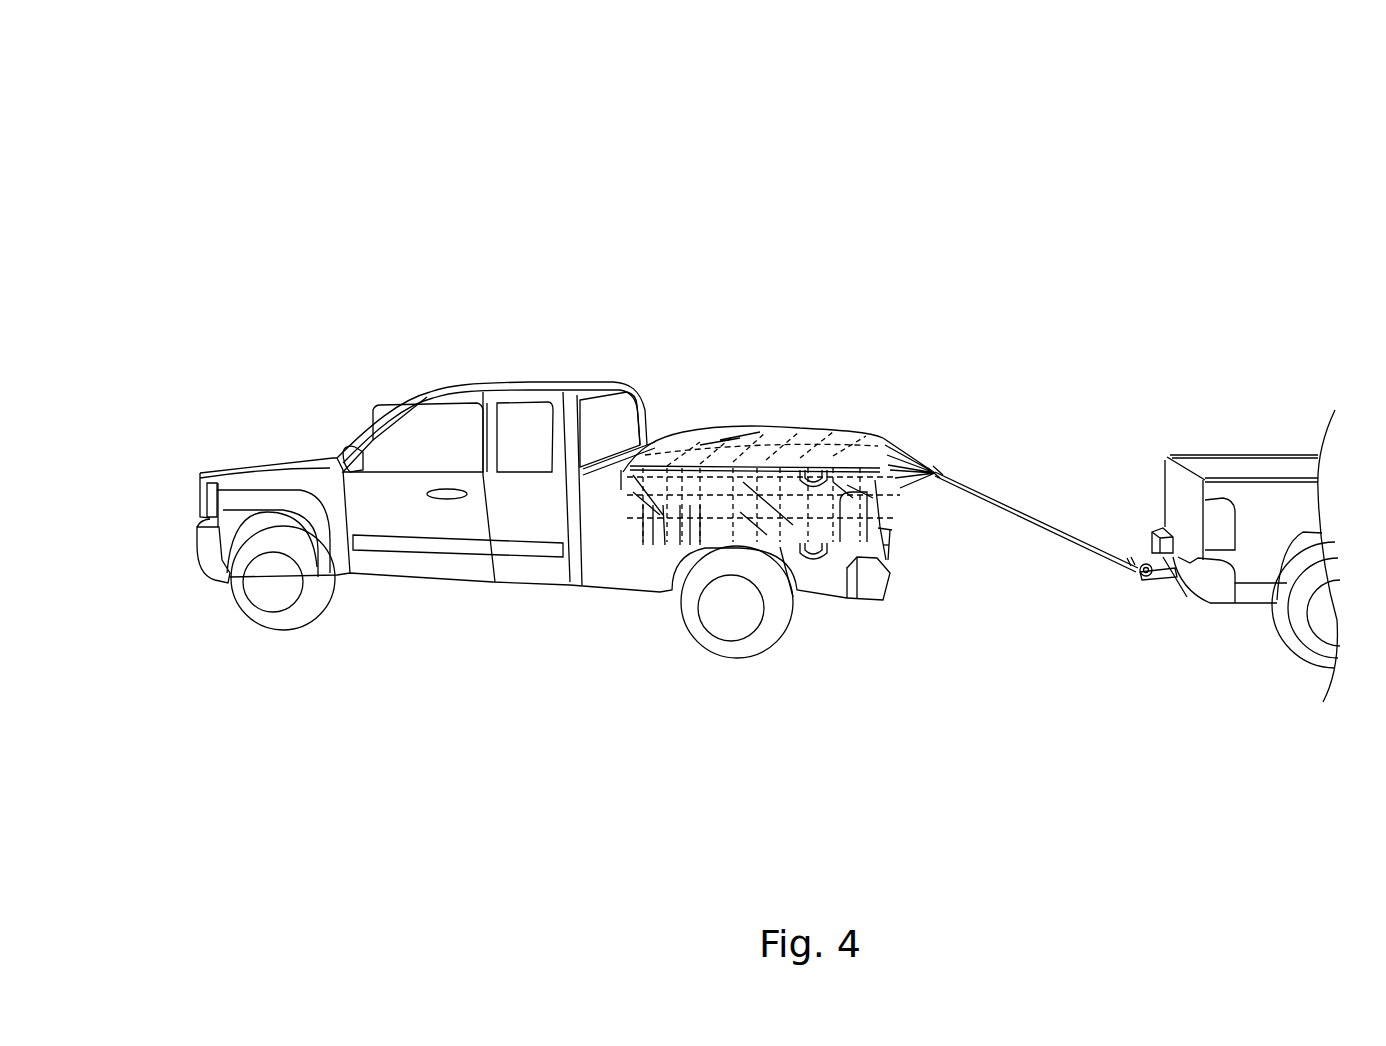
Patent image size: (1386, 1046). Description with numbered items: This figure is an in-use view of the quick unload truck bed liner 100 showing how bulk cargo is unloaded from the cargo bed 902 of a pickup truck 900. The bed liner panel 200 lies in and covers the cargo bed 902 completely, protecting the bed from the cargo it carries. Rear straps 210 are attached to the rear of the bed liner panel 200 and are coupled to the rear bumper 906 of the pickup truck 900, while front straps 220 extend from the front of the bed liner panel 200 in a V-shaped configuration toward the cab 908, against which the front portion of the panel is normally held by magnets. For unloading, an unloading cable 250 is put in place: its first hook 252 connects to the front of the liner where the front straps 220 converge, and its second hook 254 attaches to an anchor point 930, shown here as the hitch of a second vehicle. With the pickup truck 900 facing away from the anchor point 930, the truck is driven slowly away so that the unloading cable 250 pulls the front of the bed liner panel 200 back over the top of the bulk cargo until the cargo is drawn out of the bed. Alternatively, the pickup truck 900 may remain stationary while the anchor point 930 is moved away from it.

The quick unload truck bed liner 100 is at (273, 200).
The cab 908 is at (484, 347).
The pickup truck 900 is at (287, 458).
The rear bumper 906 is at (880, 593).
The rear straps 210 is at (893, 537).
The cargo bed 902 is at (760, 410).
The bed liner panel 200 is at (840, 433).
The front straps 220 is at (905, 460).
The first hook 252 is at (937, 472).
The unloading cable 250 is at (1072, 540).
The second hook 254 is at (1145, 565).
The anchor point 930 is at (1157, 580).